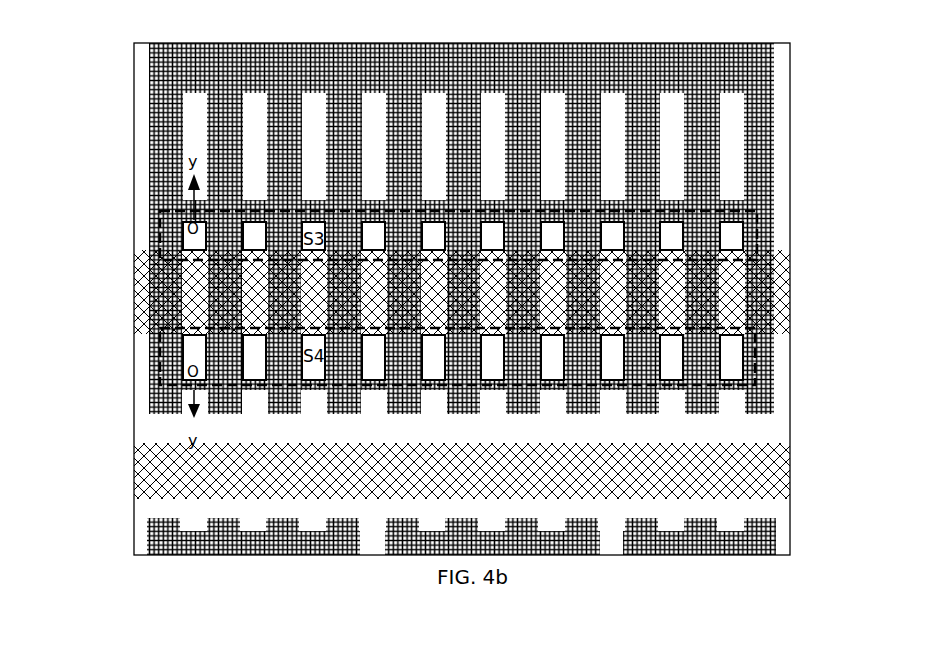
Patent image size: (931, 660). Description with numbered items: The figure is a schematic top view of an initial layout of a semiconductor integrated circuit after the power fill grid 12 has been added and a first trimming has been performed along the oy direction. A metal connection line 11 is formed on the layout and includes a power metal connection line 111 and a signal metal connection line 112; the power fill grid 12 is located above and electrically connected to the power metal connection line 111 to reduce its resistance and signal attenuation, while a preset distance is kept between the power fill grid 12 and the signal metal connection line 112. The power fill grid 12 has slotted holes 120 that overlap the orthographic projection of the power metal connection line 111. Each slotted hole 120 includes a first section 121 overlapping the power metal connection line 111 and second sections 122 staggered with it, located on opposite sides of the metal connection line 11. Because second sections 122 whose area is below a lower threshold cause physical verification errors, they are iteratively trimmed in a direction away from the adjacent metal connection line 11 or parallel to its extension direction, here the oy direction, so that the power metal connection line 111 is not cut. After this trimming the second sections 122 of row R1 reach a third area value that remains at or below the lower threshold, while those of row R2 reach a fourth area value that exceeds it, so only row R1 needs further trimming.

The power fill grid 12 is at (787, 180).
The metal connection line 11 is at (517, 402).
The power metal connection line 111 is at (790, 322).
The signal metal connection line 112 is at (491, 458).
The slotted hole 120 is at (437, 228).
The first section 121 is at (192, 290).
The second section 122 is at (193, 345).
The row R1 is at (772, 233).
The row R2 is at (790, 289).